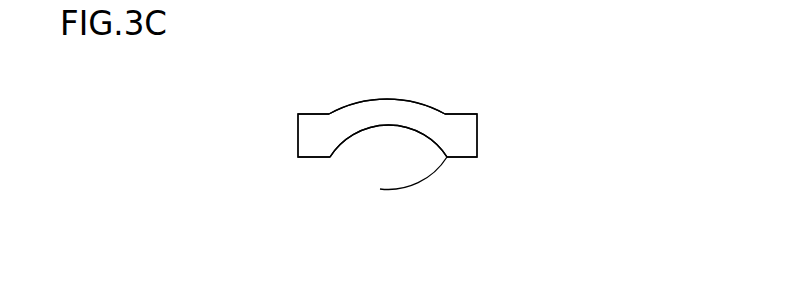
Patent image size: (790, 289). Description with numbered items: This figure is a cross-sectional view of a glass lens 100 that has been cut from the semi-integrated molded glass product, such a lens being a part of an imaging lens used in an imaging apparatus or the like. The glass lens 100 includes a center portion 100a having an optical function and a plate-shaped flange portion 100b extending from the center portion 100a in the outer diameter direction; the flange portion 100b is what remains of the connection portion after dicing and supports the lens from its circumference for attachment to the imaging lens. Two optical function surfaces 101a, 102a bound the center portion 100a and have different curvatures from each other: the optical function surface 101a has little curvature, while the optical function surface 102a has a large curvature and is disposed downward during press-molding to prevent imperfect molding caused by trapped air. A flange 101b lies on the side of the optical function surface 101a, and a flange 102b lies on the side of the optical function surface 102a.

The glass lens 100 is at (566, 80).
The center portion 100a is at (373, 173).
The flange portion 100b is at (305, 134).
The optical function surface 101a is at (388, 101).
The flange 101b is at (462, 113).
The optical function surface 102a is at (392, 189).
The flange 102b is at (462, 157).